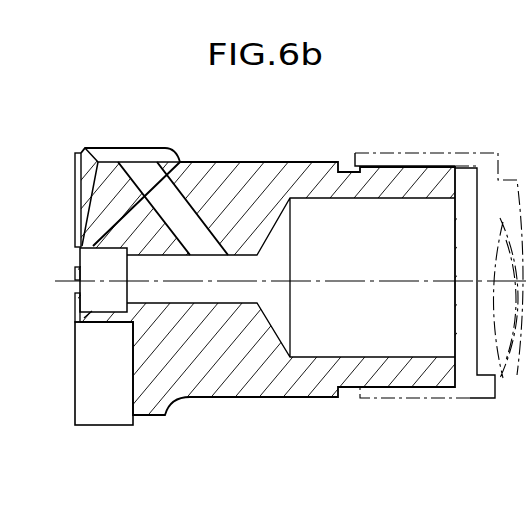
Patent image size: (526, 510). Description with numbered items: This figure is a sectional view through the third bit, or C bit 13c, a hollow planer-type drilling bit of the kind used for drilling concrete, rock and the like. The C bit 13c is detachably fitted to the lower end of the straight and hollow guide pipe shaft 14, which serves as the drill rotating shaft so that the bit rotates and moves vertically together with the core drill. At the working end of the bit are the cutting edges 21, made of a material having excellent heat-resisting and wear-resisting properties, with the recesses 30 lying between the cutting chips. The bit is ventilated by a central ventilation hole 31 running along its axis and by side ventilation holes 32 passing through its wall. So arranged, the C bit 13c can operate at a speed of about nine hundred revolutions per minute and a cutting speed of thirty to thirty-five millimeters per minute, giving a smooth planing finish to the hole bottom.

The third bit 13c is at (318, 162).
The guide pipe shaft 14 is at (491, 193).
The cutting edges 21 is at (75, 192).
The recesses 30 is at (93, 173).
The central ventilation hole 31 is at (143, 291).
The side ventilation holes 32 is at (215, 196).